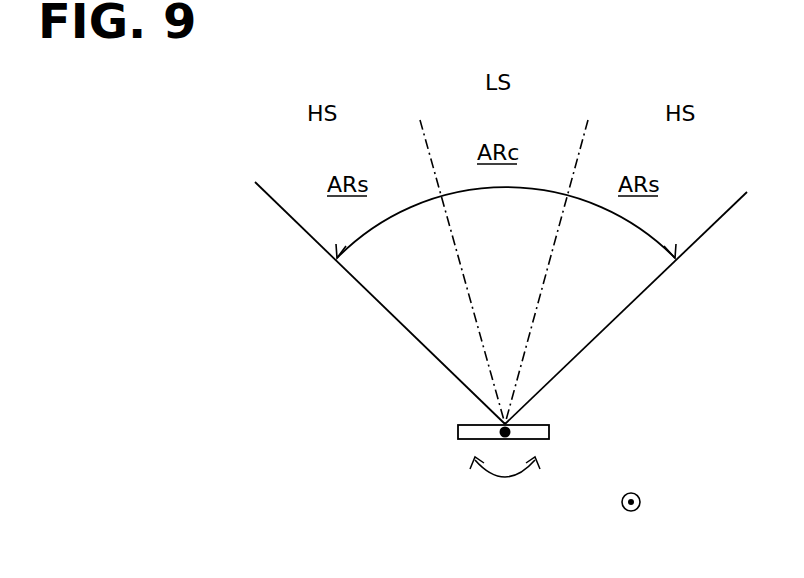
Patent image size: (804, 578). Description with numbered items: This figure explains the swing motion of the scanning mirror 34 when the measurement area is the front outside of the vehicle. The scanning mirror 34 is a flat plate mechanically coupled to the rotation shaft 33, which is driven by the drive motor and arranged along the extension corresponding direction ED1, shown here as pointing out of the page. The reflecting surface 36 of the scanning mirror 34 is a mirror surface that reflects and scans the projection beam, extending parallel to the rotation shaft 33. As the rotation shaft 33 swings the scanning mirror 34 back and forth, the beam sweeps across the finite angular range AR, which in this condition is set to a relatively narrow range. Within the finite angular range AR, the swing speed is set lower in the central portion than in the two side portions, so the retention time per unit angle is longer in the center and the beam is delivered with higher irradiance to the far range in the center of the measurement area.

The rotation shaft 33 is at (498, 432).
The scanning mirror 34 is at (549, 433).
The reflecting surface 36 is at (470, 422).
The extension corresponding direction ED1 is at (641, 501).
The finite angular range AR is at (357, 237).